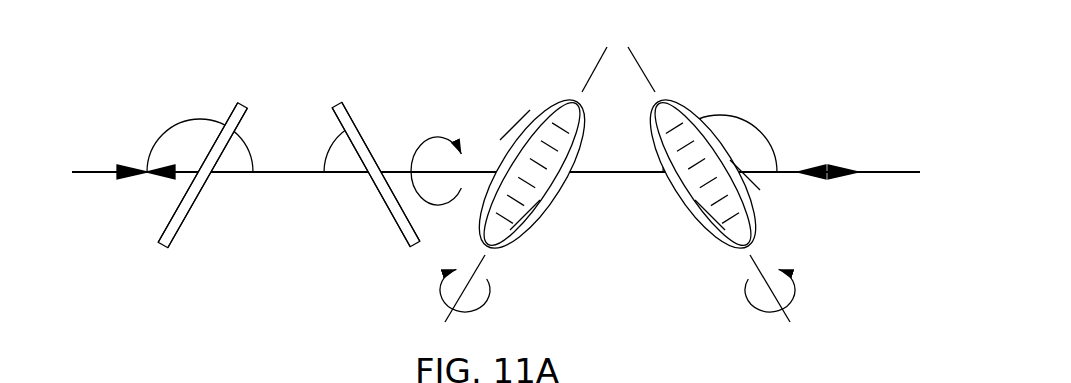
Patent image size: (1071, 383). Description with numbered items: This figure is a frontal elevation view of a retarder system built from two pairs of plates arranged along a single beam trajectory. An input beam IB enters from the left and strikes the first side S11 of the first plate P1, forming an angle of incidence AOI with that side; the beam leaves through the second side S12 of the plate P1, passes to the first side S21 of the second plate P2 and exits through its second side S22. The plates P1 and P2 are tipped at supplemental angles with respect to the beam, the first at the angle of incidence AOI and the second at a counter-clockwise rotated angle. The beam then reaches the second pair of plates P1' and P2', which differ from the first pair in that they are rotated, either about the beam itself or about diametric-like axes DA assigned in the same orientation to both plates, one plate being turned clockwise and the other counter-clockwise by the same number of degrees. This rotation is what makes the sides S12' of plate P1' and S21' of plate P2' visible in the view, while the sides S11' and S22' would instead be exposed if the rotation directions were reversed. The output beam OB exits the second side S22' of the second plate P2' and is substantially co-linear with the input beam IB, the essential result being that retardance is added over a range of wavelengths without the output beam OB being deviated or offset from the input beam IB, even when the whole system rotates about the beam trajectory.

The first plate P1 is at (202, 142).
The second plate P2 is at (376, 138).
The first side of first plate S11 is at (169, 221).
The second side of first plate S12 is at (208, 212).
The first side of second plate S21 is at (371, 212).
The second side of second plate S22 is at (405, 171).
The first plate of second pair P1' is at (532, 148).
The second plate of second pair P2' is at (703, 148).
The first side of rotated first plate S11' is at (479, 101).
The second side of rotated first plate S12' is at (538, 251).
The first side of rotated second plate S21' is at (696, 251).
The second side of rotated second plate S22' is at (776, 209).
The input beam IB is at (127, 183).
The output beam OB is at (157, 182).
The angle of incidence AOI is at (457, 143).
The diametric-like axis DA is at (593, 45).